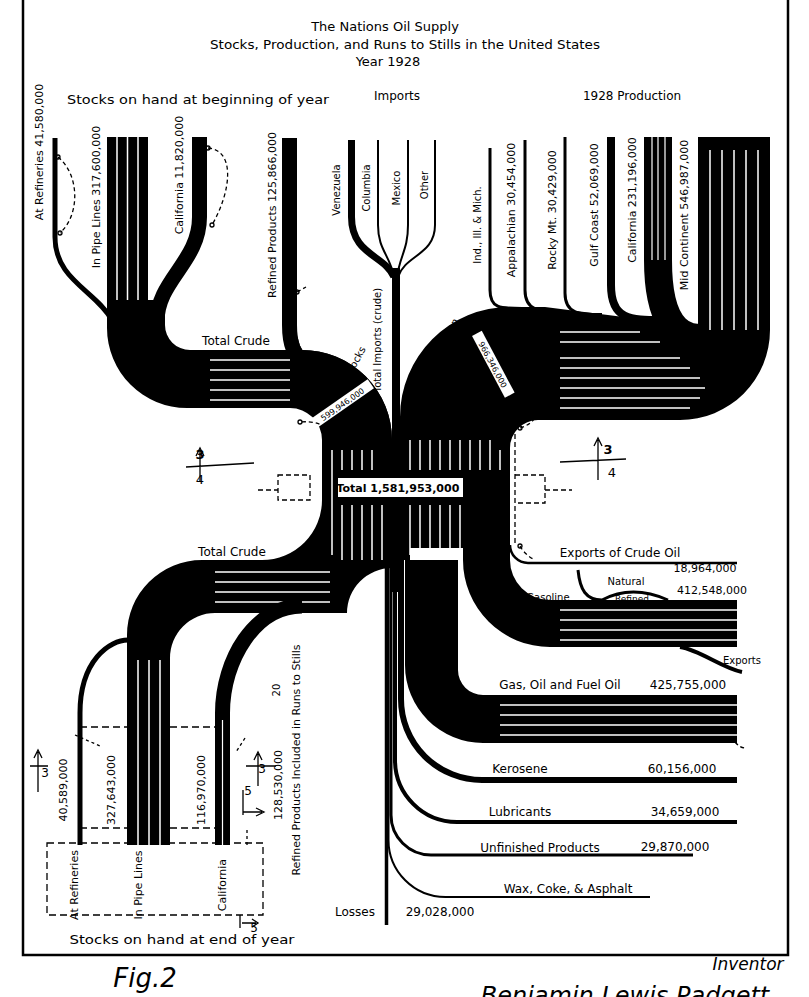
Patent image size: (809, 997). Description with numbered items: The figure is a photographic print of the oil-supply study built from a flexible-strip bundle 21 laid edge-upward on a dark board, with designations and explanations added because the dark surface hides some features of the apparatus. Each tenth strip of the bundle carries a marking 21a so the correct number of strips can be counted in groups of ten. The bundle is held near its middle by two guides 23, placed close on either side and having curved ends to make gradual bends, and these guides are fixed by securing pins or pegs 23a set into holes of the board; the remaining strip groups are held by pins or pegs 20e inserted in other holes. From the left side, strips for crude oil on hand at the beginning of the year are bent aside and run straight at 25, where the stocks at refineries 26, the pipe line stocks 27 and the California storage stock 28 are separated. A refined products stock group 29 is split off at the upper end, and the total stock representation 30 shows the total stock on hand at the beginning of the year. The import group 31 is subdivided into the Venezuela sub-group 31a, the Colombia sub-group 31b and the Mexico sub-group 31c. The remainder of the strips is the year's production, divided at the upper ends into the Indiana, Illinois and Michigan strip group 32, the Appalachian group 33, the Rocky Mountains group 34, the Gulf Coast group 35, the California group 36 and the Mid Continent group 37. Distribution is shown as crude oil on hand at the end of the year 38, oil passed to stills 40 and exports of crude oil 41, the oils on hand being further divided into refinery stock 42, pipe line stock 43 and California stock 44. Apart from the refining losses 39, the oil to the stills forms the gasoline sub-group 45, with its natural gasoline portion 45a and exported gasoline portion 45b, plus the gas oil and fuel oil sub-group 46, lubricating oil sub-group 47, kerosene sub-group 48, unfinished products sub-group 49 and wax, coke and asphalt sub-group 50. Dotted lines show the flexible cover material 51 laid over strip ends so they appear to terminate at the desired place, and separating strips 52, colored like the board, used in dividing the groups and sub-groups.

The pins or pegs 20e is at (190, 447).
The flexible-strip bundle 21 is at (560, 460).
The marking on tenth strip 21a is at (734, 124).
The guides 23 is at (413, 481).
The securing pins or pegs 23a is at (508, 587).
The straight strip portion 25 is at (108, 351).
The refinery stock strips 26 is at (71, 229).
The pipe line stock strips 27 is at (140, 128).
The California storage stock strips 28 is at (199, 137).
The refined products stock group 29 is at (297, 207).
The total stock representation 30 is at (330, 348).
The import group 31 is at (402, 305).
The Venezuela import sub-group 31a is at (353, 262).
The Colombia import sub-group 31b is at (378, 141).
The Mexico import sub-group 31c is at (409, 142).
The Indiana, Illinois and Michigan strip group 32 is at (490, 148).
The Appalachian group 33 is at (525, 140).
The Rocky Mountains group 34 is at (566, 190).
The Gulf Coast group 35 is at (613, 215).
The California group 36 is at (658, 137).
The Mid Continent group 37 is at (772, 140).
The crude oil on hand at end of year 38 is at (186, 566).
The refining losses 39 is at (384, 853).
The oil passed to stills 40 is at (508, 532).
The exports of crude oil 41 is at (735, 563).
The refinery stock at end of year 42 is at (80, 706).
The pipe line stock at end of year 43 is at (118, 719).
The California stock at end of year 44 is at (216, 713).
The gasoline sub-group 45 is at (740, 634).
The natural gasoline portion 45a is at (592, 598).
The exported gasoline portion 45b is at (685, 660).
The gas oil and fuel oil sub-group 46 is at (740, 740).
The lubricating oil sub-group 47 is at (740, 826).
The kerosene sub-group 48 is at (740, 786).
The unfinished products sub-group 49 is at (705, 856).
The wax, coke and asphalt sub-group 50 is at (652, 898).
The flexible cover material 51 is at (255, 827).
The separating strips 52 is at (256, 706).